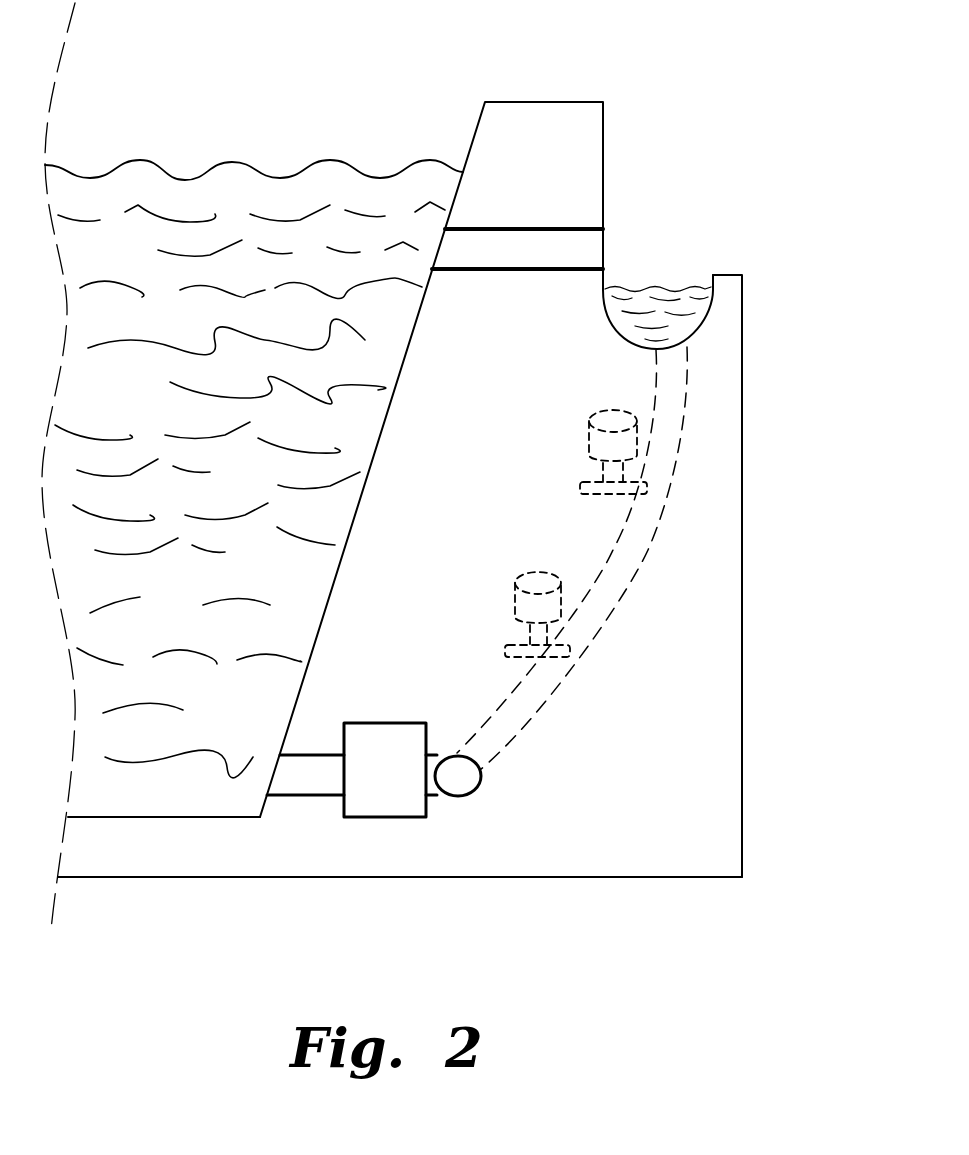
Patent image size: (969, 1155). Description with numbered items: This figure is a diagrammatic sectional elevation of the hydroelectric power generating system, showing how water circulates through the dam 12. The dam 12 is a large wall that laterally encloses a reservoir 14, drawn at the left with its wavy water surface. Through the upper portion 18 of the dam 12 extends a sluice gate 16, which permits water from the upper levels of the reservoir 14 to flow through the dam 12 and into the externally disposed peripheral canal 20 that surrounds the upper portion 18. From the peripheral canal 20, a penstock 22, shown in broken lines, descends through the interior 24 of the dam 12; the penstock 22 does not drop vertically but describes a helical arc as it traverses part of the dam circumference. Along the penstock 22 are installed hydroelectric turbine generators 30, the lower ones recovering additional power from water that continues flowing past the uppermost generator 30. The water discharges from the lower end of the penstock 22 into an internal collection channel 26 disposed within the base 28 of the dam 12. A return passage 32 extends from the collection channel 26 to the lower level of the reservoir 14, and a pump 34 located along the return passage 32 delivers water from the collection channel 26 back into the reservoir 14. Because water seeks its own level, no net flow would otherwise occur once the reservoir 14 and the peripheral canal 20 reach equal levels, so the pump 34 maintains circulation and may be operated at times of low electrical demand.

The dam 12 is at (743, 572).
The reservoir 14 is at (232, 165).
The sluice gate 16 is at (593, 245).
The upper portion 18 is at (603, 152).
The peripheral canal 20 is at (670, 282).
The penstock 22 is at (610, 628).
The interior 24 is at (514, 489).
The internal collection channel 26 is at (480, 793).
The base 28 is at (743, 848).
The hydroelectric turbine generator 30 is at (590, 462).
The return passage 32 is at (300, 795).
The pump 34 is at (378, 723).